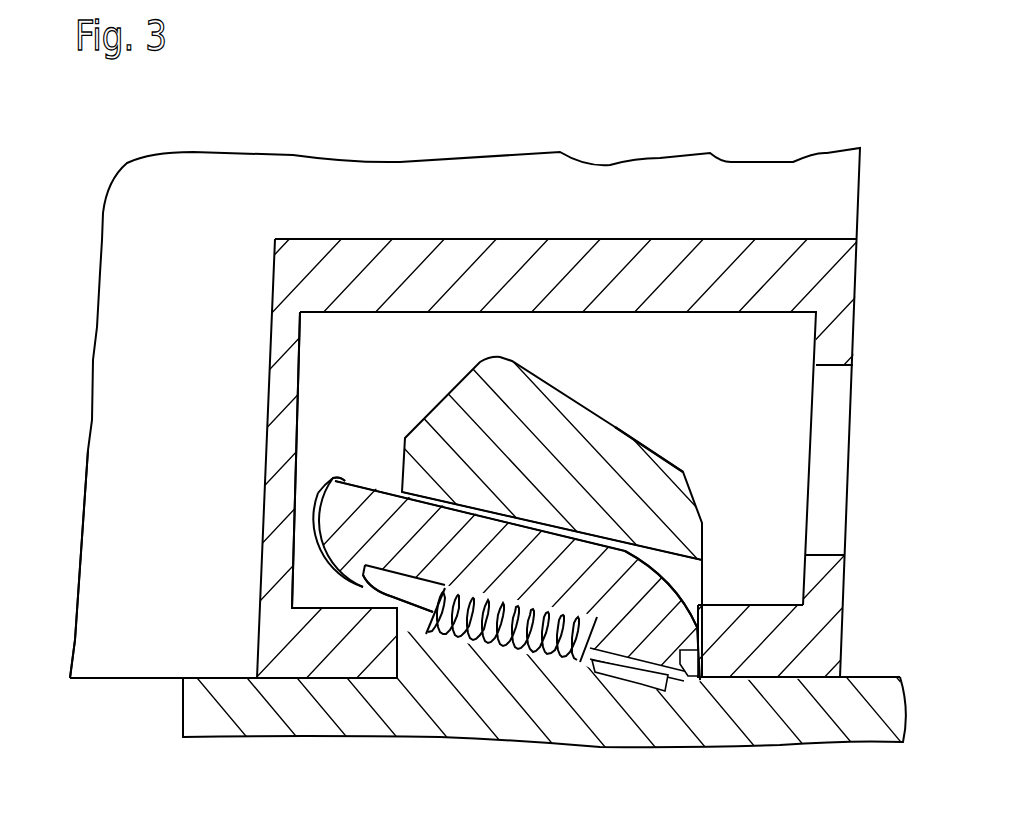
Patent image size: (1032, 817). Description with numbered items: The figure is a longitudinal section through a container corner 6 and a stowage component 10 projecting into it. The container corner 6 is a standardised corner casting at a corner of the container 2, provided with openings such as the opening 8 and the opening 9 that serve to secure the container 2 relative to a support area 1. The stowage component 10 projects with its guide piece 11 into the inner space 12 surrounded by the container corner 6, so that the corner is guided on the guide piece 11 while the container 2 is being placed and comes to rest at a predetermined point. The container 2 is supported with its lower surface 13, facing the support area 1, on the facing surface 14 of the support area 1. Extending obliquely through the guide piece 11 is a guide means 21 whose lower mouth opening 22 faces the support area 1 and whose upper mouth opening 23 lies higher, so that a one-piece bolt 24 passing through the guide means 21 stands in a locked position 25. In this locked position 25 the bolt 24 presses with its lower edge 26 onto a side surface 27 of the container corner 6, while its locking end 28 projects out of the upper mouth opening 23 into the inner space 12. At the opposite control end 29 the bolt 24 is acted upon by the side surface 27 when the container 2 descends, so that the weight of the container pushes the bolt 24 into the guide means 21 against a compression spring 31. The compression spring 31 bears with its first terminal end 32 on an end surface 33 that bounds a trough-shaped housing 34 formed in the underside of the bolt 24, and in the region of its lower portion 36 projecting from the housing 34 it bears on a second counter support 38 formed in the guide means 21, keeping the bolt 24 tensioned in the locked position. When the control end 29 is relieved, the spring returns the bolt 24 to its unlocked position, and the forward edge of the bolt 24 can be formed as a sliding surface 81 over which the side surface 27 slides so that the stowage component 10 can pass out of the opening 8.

The support area 1 is at (197, 697).
The container 2 is at (587, 185).
The container corner 6 is at (287, 265).
The opening 8 is at (707, 598).
The opening 9 is at (836, 486).
The stowage component 10 is at (645, 415).
The guide piece 11 is at (550, 395).
The inner space 12 is at (383, 363).
The lower surface 13 is at (93, 682).
The surface 14 is at (862, 670).
The guide means 21 is at (663, 550).
The lower mouth opening 22 is at (680, 567).
The upper mouth opening 23 is at (400, 490).
The bolt 24 is at (335, 525).
The locked position 25 is at (324, 466).
The lower edge 26 is at (647, 690).
The side surface 27 is at (278, 577).
The locking end 28 is at (330, 488).
The control end 29 is at (693, 690).
The compression spring 31 is at (495, 655).
The first terminal end 32 is at (588, 665).
The end surface 33 is at (622, 610).
The housing 34 is at (377, 580).
The lower portion 36 is at (392, 601).
The second counter support 38 is at (415, 619).
The sliding surface 81 is at (330, 543).